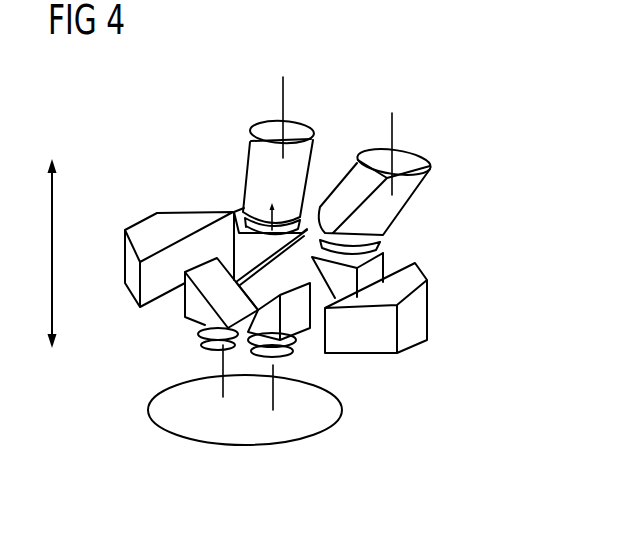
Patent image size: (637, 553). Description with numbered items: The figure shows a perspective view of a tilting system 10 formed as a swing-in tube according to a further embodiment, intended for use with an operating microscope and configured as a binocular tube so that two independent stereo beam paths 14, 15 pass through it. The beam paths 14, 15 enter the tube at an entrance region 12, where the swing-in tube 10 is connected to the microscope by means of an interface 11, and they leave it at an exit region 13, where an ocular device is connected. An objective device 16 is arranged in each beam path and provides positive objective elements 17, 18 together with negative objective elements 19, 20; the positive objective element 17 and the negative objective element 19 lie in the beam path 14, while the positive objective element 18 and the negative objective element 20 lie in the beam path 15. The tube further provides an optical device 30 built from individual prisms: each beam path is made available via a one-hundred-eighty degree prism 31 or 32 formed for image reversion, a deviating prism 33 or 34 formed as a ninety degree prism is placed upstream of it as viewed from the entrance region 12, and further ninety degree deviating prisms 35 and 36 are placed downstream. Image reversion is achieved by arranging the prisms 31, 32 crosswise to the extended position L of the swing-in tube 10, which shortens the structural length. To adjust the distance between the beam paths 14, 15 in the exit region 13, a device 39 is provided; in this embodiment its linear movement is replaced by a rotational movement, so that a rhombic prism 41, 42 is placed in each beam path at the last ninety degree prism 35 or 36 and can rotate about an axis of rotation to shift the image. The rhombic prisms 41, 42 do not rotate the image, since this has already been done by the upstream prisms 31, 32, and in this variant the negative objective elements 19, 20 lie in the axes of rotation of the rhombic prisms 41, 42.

The tilting system 10 is at (107, 137).
The interface 11 is at (323, 428).
The entrance region 12 is at (143, 377).
The exit region 13 is at (247, 88).
The beam path 14 is at (283, 102).
The beam path 15 is at (393, 127).
The objective device 16 is at (163, 343).
The positive objective element 17 is at (210, 344).
The positive objective element 18 is at (297, 350).
The negative objective element 19 is at (240, 213).
The negative objective element 20 is at (372, 242).
The optical device 30 is at (455, 148).
The 180° prism 31 is at (145, 230).
The 180° prism 32 is at (420, 320).
The deviating prism 33 is at (193, 310).
The deviating prism 34 is at (297, 300).
The deviating prism 35 is at (237, 253).
The deviating prism 36 is at (380, 270).
The device for adjusting the distance between the beam paths 39 is at (227, 153).
The rhombic prism 41 is at (317, 163).
The rhombic prism 42 is at (413, 188).
The extended position L is at (53, 223).